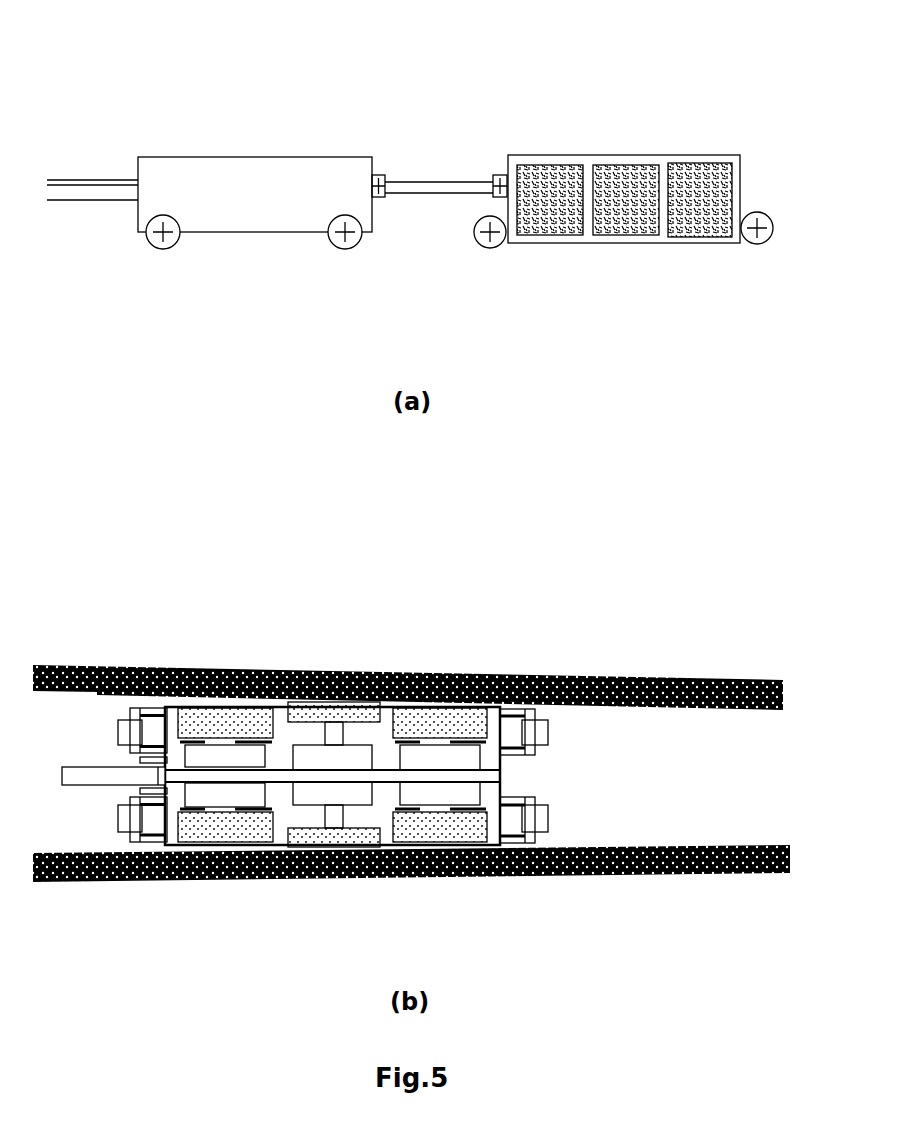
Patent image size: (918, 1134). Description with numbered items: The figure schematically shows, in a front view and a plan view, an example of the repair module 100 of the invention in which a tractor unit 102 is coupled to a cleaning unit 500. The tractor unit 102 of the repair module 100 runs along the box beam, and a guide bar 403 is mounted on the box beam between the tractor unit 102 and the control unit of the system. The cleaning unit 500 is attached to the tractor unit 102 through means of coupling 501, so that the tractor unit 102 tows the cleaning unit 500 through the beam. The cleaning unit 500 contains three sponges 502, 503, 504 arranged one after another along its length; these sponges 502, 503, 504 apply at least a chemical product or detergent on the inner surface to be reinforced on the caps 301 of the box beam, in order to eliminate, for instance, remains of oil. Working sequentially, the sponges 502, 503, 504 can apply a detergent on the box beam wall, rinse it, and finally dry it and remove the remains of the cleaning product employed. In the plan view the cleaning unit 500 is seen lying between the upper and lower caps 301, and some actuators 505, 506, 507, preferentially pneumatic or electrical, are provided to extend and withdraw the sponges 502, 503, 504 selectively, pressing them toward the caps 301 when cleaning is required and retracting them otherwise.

In FIG. 5a, the repair module 100 is at (255, 216).
In FIG. 5a, the tractor unit 102 is at (250, 143).
In FIG. 5a, the guide bar 403 is at (103, 197).
In FIG. 5a, the means of coupling 501 is at (450, 177).
In FIG. 5a, the cleaning unit 500 is at (623, 191).
In FIG. 5b, the cleaning unit 500 is at (400, 769).
In FIG. 5a, the sponge 502 is at (547, 225).
In FIG. 5b, the sponge 502 is at (185, 832).
In FIG. 5a, the sponge 503 is at (628, 225).
In FIG. 5b, the sponge 503 is at (340, 703).
In FIG. 5a, the sponge 504 is at (712, 225).
In FIG. 5b, the sponge 504 is at (443, 723).
In FIG. 5b, the actuator 505 is at (218, 745).
In FIG. 5b, the actuator 506 is at (323, 733).
In FIG. 5b, the actuator 507 is at (437, 795).
In FIG. 5b, the caps of the box beam 301 is at (663, 680).